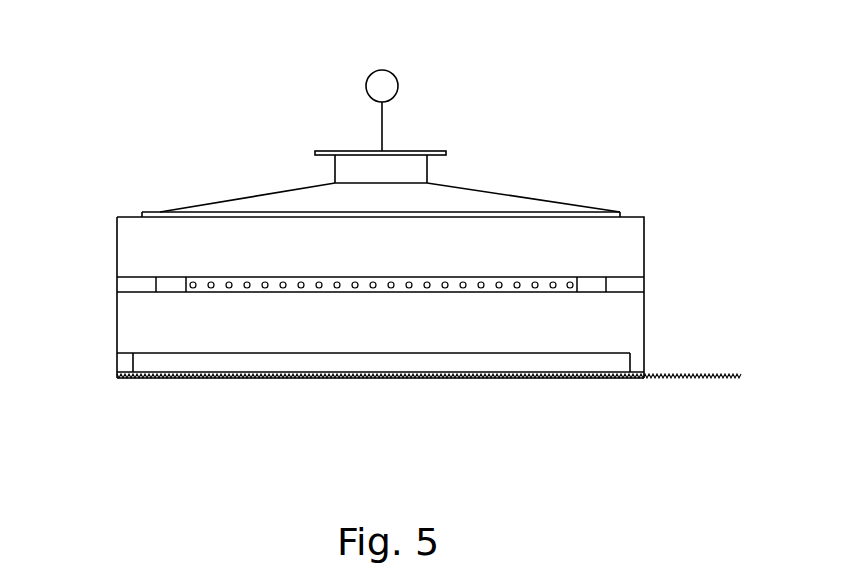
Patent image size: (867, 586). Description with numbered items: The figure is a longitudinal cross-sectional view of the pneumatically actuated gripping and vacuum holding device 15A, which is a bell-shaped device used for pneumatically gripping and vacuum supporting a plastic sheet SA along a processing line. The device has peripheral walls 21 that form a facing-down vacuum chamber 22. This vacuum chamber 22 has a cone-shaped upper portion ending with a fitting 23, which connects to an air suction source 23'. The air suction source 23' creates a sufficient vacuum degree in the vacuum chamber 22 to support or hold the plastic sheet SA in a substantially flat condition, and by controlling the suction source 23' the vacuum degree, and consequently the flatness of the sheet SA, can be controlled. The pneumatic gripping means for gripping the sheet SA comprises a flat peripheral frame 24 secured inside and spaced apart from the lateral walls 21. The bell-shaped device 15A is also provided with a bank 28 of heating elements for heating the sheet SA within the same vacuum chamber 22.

The pneumatic gripping and vacuum holding device 15A is at (615, 183).
The peripheral walls 21 is at (644, 322).
The vacuum chamber 22 is at (128, 325).
The fitting 23 is at (433, 152).
The air suction source 23' is at (420, 77).
The flat peripheral frame 24 is at (117, 363).
The bank of heating elements 28 is at (543, 280).
The plastic sheet SA is at (268, 378).